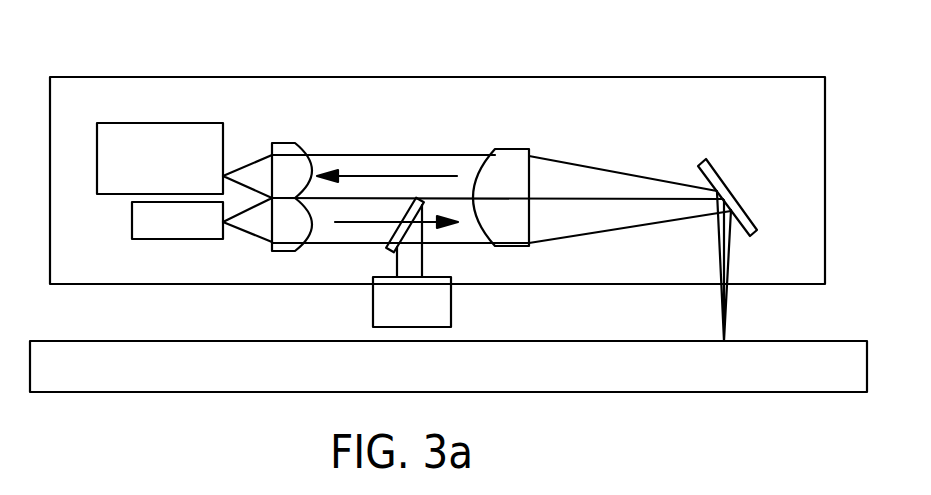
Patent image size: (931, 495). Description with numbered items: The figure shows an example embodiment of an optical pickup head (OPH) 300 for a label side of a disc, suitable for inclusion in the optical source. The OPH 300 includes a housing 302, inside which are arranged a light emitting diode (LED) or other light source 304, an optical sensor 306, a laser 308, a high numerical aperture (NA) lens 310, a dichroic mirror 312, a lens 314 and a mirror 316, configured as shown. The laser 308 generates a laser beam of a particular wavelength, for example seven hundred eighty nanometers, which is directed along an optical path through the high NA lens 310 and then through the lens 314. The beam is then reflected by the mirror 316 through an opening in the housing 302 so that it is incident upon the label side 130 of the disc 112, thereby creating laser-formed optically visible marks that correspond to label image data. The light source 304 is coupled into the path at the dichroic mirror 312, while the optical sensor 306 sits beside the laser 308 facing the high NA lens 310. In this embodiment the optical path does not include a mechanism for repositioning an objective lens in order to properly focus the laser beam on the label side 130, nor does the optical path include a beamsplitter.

The optical pickup head 300 is at (138, 43).
The housing 302 is at (283, 77).
The light emitting diode 304 is at (373, 300).
The optical sensor 306 is at (160, 123).
The laser 308 is at (174, 239).
The high numerical aperture lens 310 is at (280, 143).
The dichroic mirror 312 is at (386, 249).
The lens 314 is at (516, 149).
The mirror 316 is at (703, 163).
The label side 130 is at (538, 341).
The disc 112 is at (512, 370).